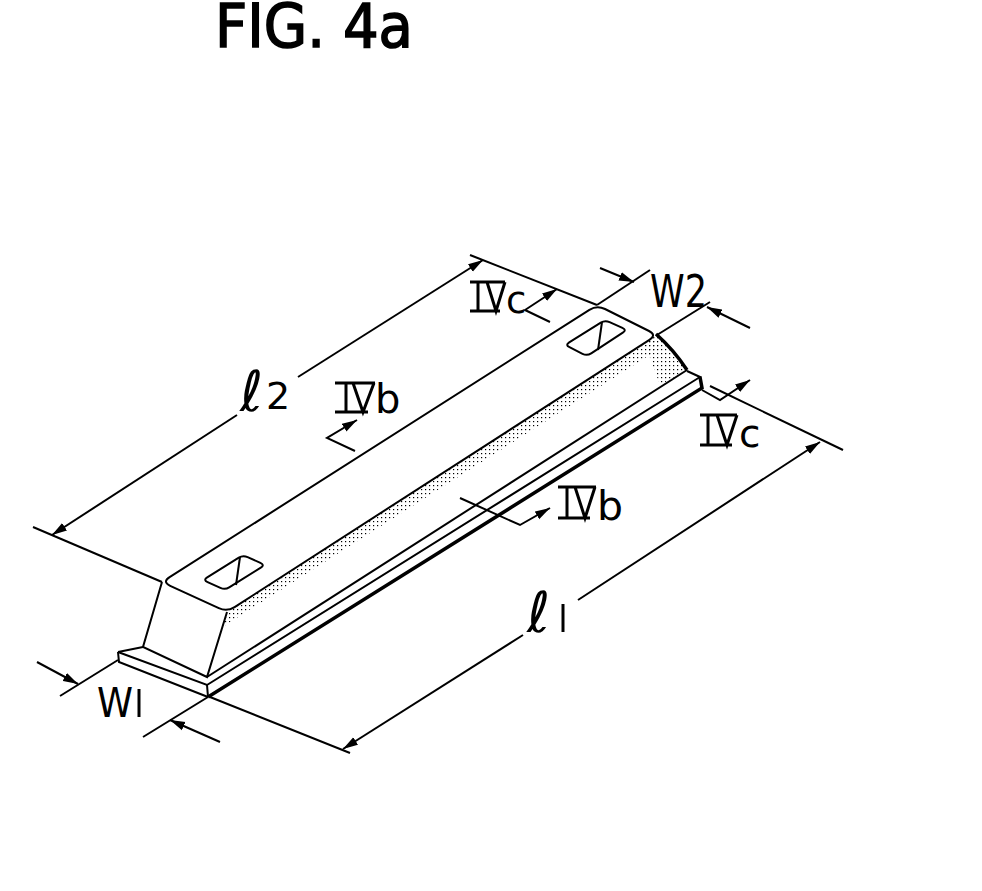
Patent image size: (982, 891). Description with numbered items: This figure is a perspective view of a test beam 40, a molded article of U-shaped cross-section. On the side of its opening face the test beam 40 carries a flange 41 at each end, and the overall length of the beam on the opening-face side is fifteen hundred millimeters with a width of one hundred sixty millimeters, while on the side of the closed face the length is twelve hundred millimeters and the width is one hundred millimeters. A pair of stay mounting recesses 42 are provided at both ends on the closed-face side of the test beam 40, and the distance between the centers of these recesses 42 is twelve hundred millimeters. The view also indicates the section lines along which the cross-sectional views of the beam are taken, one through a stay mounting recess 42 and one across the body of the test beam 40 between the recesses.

The test beam 40 is at (687, 243).
The flange 41 is at (131, 651).
The stay mounting recess 42 is at (222, 570).